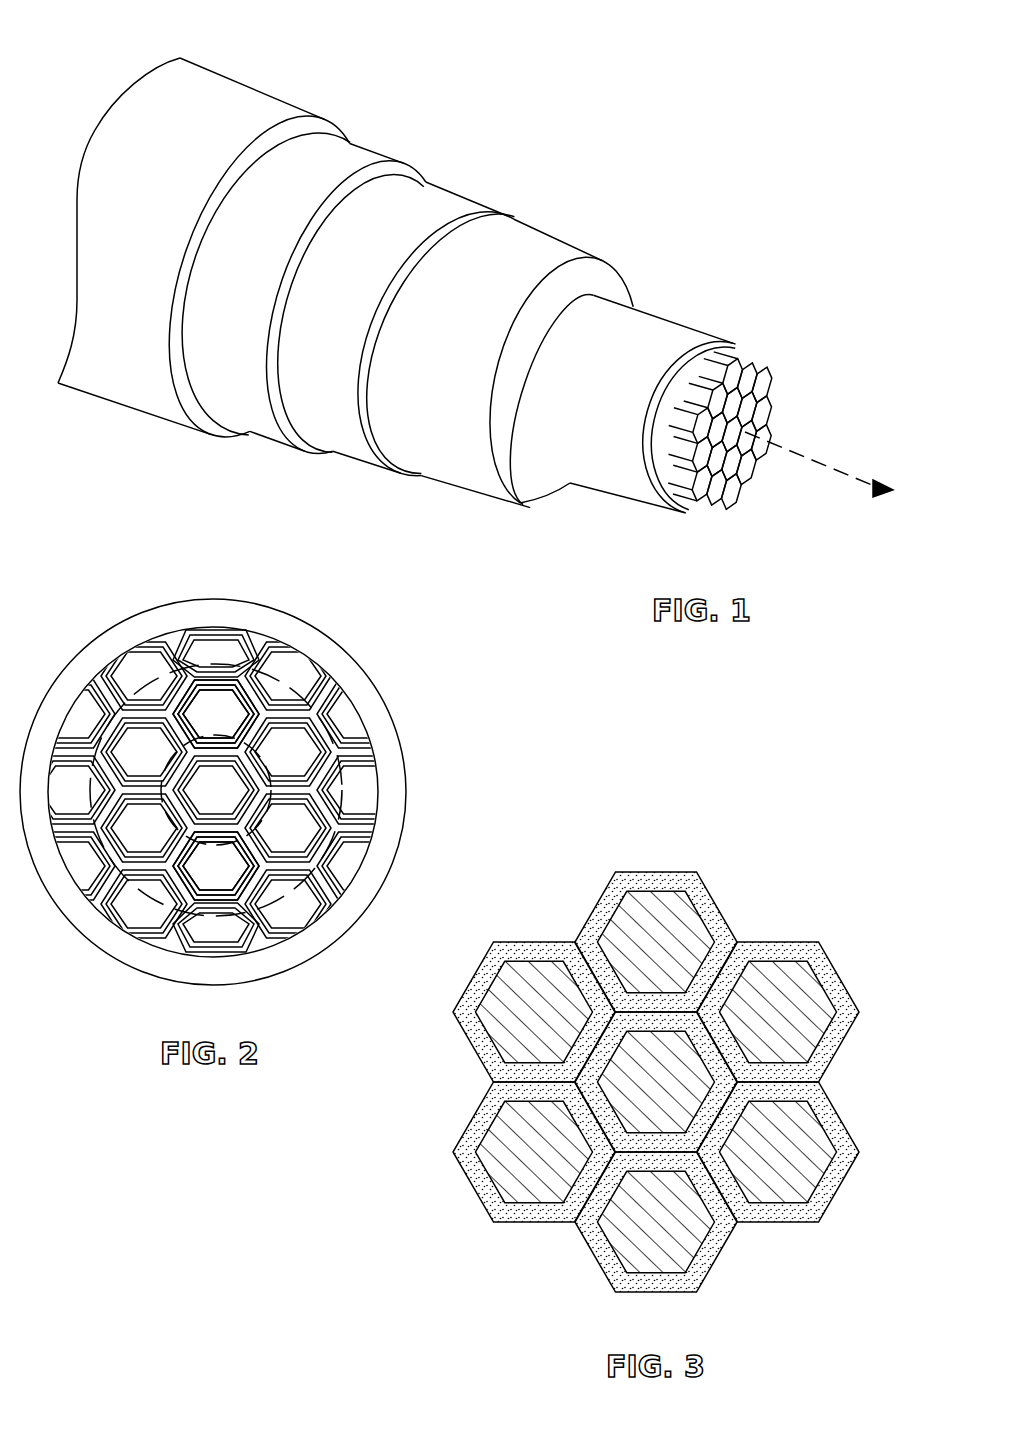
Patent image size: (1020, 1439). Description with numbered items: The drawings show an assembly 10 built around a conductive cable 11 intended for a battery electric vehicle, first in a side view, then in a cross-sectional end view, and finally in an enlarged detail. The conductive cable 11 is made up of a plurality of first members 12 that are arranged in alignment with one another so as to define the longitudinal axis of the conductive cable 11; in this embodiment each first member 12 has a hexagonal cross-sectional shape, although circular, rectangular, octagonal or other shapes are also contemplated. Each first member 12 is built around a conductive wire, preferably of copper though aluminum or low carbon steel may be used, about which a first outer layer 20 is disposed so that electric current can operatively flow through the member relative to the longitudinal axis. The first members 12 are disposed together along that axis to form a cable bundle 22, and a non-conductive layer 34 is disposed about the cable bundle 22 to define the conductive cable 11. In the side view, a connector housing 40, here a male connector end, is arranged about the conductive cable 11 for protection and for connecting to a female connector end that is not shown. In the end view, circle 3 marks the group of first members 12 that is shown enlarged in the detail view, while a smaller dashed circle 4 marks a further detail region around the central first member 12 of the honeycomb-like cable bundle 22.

In FIG. 1, the assembly 10 is at (116, 52).
In FIG. 1, the conductive cable 11 is at (877, 298).
In FIG. 2, the conductive cable 11 is at (116, 586).
In FIG. 1, the first members 12 is at (727, 405).
In FIG. 2, the first members 12 is at (222, 717).
In FIG. 3, the first members 12 is at (668, 1058).
In FIG. 2, the first outer layer 20 is at (203, 677).
In FIG. 3, the first outer layer 20 is at (660, 882).
In FIG. 2, the cable bundle 22 is at (385, 842).
In FIG. 3, the cable bundle 22 is at (586, 1043).
In FIG. 1, the non-conductive layer 34 is at (597, 398).
In FIG. 2, the non-conductive layer 34 is at (357, 900).
In FIG. 1, the connector housing 40 is at (660, 192).
In FIG. 2, the circle 3 is at (265, 665).
In FIG. 2, the detail circle 4 is at (330, 748).